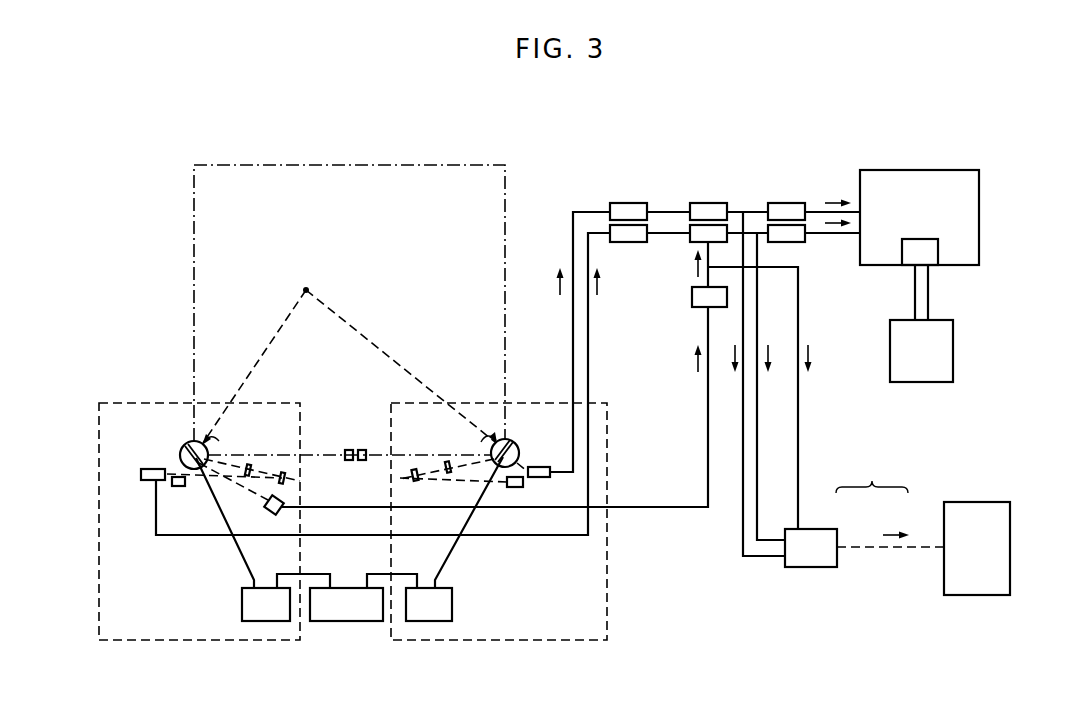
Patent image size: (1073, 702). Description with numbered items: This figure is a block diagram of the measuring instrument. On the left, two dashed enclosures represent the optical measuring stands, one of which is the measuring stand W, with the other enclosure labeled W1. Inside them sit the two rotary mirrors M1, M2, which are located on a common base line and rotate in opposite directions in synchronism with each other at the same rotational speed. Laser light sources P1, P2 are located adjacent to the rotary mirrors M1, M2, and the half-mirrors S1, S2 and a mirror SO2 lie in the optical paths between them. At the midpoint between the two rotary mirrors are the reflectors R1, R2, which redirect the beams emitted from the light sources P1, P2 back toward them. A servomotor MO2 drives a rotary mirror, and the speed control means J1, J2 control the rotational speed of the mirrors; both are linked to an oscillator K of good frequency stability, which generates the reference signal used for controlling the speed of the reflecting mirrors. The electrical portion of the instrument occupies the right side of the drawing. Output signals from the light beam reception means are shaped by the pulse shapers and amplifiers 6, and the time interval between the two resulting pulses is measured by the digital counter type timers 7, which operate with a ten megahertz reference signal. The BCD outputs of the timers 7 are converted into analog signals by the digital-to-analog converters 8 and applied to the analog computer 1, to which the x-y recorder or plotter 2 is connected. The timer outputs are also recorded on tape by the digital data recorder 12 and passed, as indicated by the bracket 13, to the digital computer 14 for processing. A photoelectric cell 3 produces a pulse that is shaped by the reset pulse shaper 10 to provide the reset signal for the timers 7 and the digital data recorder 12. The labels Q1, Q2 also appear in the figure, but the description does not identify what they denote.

The analog computer 1 is at (927, 228).
The x-y recorder or plotter 2 is at (927, 366).
The photoelectric cell 3 is at (266, 512).
The pulse shaper and amplifier 6 is at (622, 236).
The digital counter type timer 7 is at (700, 236).
The digital-to-analog converter 8 is at (778, 236).
The reset pulse shaper 10 is at (692, 297).
The digital data recorder 12 is at (815, 560).
The output signal 13 is at (872, 475).
The digital computer 14 is at (990, 563).
The light source / reference point Q1 is at (134, 500).
The light source Q2 is at (545, 478).
The optical head W1 is at (128, 403).
The measuring stand W is at (607, 548).
The rotary mirror M1 is at (186, 443).
The rotary mirror M2 is at (513, 442).
The servomotor MO2 is at (180, 455).
The half-mirror S1 is at (252, 465).
The half-mirror S2 is at (445, 462).
The mirror SO2 is at (300, 481).
The reflector R1 is at (347, 450).
The reflector R2 is at (362, 450).
The light source P1 is at (180, 487).
The light source P2 is at (514, 489).
The means for controlling the rotational speed of the rotary mirrors J1 is at (244, 605).
The means for controlling the rotational speed of the rotary mirrors J2 is at (452, 605).
The oscillator K is at (350, 628).